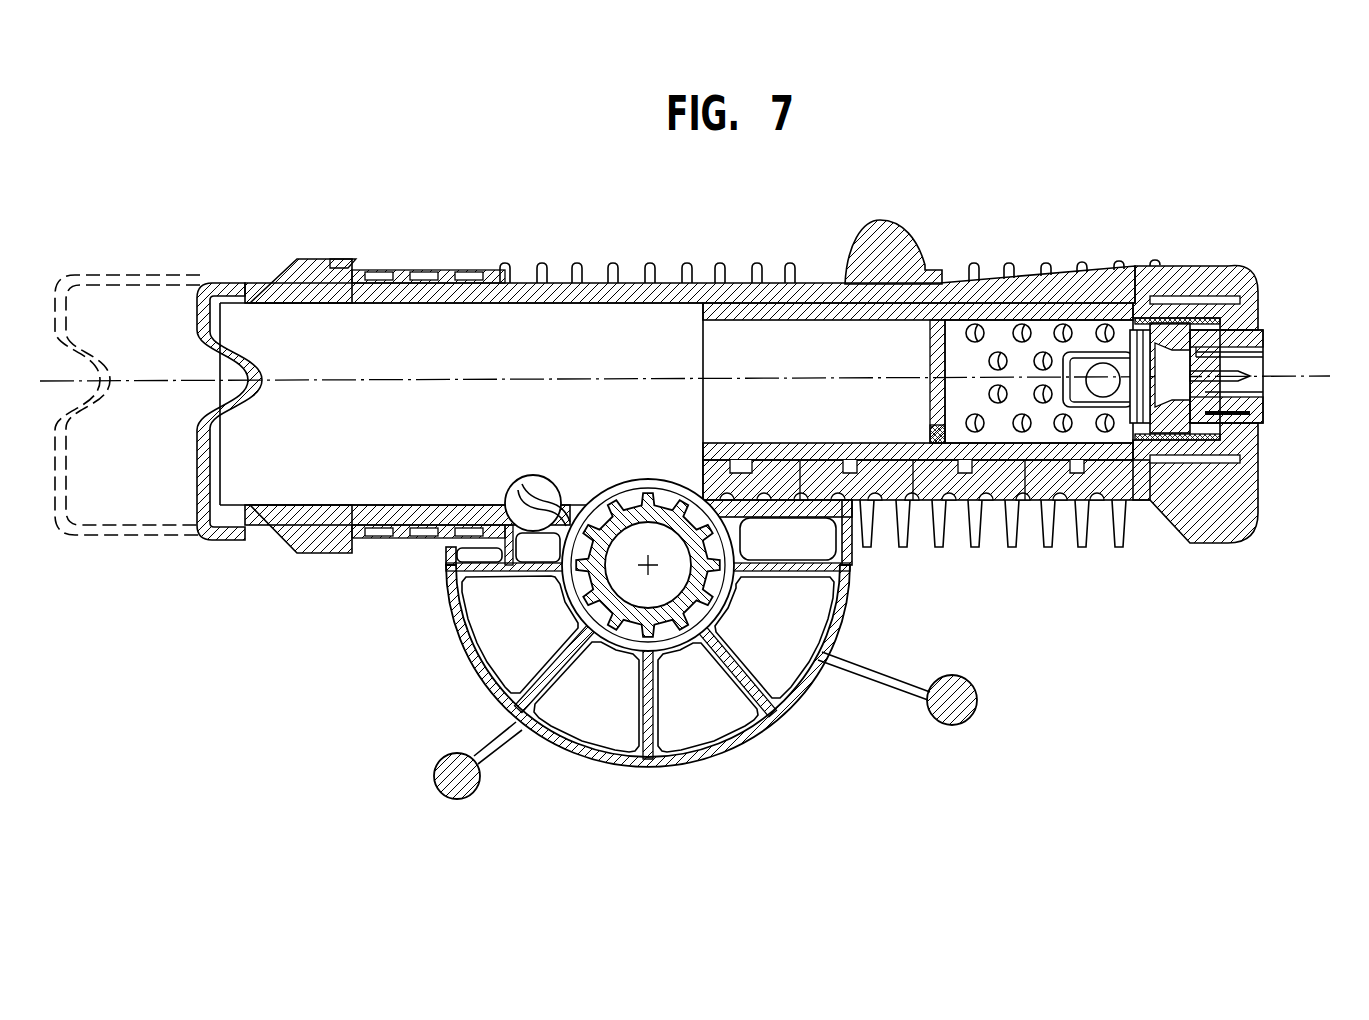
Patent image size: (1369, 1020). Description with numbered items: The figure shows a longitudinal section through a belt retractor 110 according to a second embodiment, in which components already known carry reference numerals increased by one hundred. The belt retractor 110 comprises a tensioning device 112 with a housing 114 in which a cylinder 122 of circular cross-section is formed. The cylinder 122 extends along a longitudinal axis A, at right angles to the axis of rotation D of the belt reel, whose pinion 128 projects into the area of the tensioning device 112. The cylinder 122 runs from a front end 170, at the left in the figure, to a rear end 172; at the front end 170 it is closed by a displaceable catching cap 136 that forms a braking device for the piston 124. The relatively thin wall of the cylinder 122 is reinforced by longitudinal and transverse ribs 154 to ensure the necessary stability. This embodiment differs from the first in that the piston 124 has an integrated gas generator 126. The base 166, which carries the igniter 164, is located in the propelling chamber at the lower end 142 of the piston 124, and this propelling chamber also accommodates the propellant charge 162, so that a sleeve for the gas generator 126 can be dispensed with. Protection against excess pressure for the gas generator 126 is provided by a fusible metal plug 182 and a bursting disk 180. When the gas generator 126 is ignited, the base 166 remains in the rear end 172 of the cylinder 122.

The belt retractor 110 is at (330, 597).
The tensioning device 112 is at (630, 242).
The housing 114 is at (622, 645).
The cylinder 122 is at (565, 290).
The piston 124 is at (956, 300).
The gas generator 126 is at (1268, 336).
The pinion 128 is at (652, 495).
The catching cap 136 is at (209, 282).
The lower end of the piston 142 is at (1229, 300).
The transverse ribs 154 is at (926, 502).
The propellant charge 162 is at (1058, 328).
The igniter 164 is at (1150, 340).
The base 166 is at (1252, 413).
The front end 170 is at (303, 283).
The rear end 172 is at (538, 488).
The bursting disk 180 is at (938, 354).
The fusible metal plug 182 is at (938, 432).
The longitudinal axis A is at (1322, 378).
The axis of rotation D is at (652, 572).